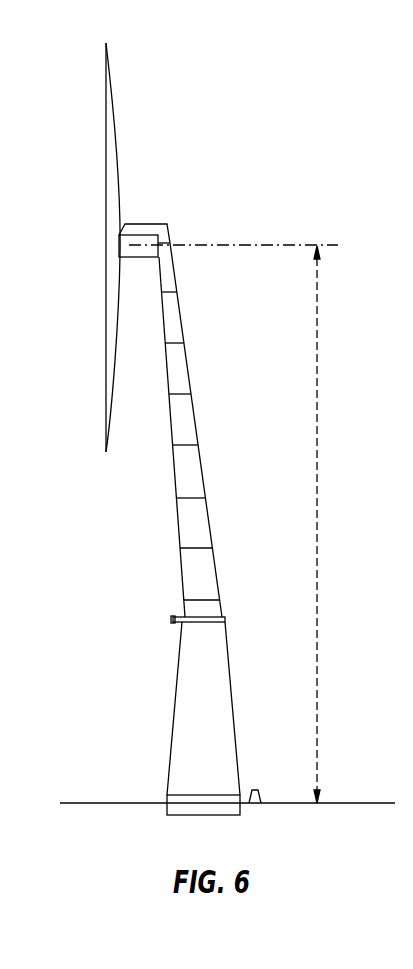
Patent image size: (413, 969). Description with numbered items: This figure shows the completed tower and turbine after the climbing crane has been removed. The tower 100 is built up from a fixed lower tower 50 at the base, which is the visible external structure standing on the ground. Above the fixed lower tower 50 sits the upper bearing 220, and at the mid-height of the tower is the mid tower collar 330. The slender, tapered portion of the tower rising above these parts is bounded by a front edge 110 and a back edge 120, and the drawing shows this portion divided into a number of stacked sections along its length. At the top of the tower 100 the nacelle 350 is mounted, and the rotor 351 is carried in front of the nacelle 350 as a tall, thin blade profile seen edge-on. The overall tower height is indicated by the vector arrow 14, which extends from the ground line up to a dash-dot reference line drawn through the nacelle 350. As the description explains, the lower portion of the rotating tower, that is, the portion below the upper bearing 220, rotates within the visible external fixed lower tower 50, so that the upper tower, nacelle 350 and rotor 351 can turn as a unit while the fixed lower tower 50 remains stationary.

The tower 100 is at (203, 154).
The rotor 351 is at (107, 357).
The nacelle 350 is at (130, 248).
The front edge 110 is at (177, 510).
The back edge 120 is at (197, 418).
The upper bearing 220 is at (225, 620).
The mid tower collar 330 is at (175, 617).
The fixed lower tower 50 is at (172, 708).
The vector arrow 14 is at (317, 523).